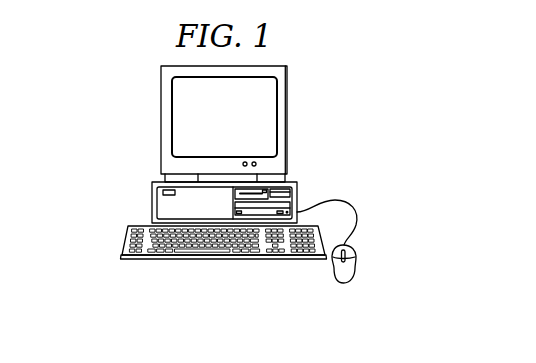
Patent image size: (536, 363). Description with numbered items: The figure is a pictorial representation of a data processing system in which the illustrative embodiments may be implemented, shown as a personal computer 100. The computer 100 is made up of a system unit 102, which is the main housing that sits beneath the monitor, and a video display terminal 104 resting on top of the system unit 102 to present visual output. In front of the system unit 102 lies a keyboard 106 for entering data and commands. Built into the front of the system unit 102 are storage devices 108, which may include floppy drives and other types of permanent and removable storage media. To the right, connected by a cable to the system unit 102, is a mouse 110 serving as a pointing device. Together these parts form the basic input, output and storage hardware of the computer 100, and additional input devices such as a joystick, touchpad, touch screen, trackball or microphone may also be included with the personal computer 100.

The computer 100 is at (104, 107).
The system unit 102 is at (214, 191).
The video display terminal 104 is at (287, 118).
The keyboard 106 is at (175, 262).
The storage devices 108 is at (297, 195).
The mouse 110 is at (341, 288).